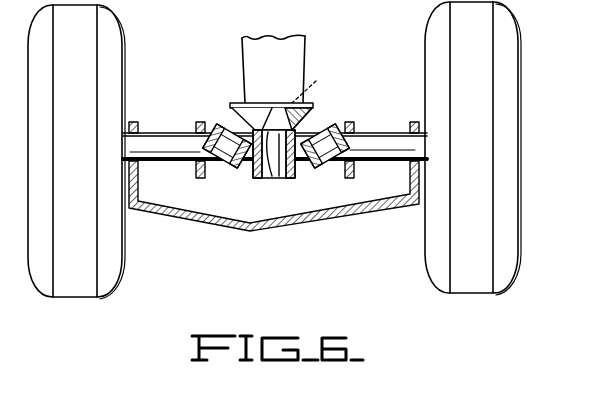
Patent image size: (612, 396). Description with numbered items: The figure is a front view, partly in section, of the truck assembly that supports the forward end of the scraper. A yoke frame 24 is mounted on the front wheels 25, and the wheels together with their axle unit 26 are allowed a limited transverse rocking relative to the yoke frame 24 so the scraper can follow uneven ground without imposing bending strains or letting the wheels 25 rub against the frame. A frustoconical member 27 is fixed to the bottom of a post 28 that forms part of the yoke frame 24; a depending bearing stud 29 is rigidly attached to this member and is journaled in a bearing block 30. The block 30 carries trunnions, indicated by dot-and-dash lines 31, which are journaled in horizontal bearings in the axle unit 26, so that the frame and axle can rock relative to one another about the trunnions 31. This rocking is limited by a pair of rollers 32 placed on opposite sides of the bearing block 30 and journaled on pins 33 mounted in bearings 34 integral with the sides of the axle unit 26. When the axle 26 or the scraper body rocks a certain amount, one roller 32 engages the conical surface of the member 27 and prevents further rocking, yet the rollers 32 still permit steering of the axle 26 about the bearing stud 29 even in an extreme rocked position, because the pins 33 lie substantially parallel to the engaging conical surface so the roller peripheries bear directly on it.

The yoke frame 24 is at (234, 53).
The front wheels 25 is at (85, 300).
The axle unit 26 is at (262, 229).
The frustoconical member 27 is at (314, 112).
The post 28 is at (245, 73).
The bearing stud 29 is at (273, 179).
The bearing block 30 is at (296, 165).
The trunnions 31 is at (314, 84).
The rollers 32 is at (224, 164).
The pins 33 is at (209, 133).
The bearings 34 is at (214, 127).